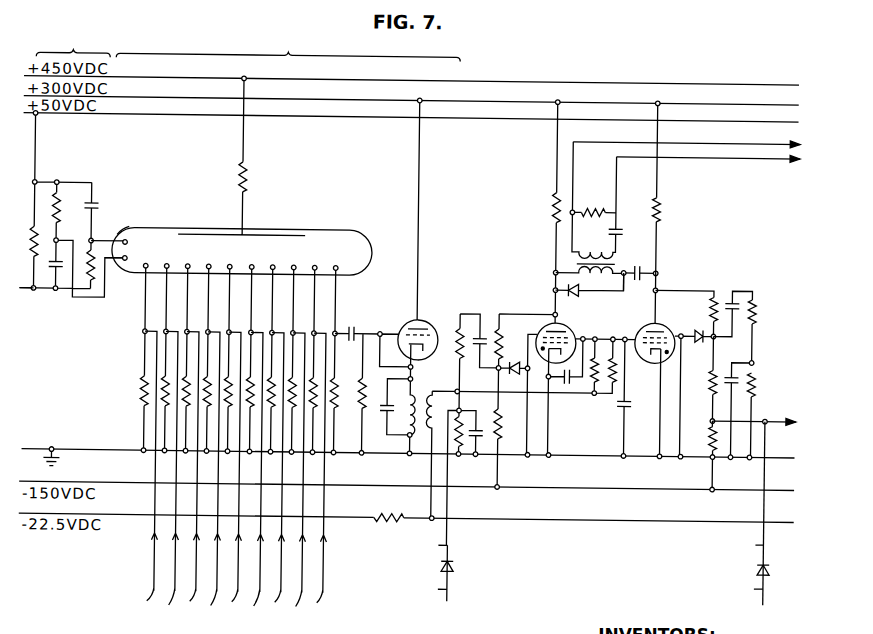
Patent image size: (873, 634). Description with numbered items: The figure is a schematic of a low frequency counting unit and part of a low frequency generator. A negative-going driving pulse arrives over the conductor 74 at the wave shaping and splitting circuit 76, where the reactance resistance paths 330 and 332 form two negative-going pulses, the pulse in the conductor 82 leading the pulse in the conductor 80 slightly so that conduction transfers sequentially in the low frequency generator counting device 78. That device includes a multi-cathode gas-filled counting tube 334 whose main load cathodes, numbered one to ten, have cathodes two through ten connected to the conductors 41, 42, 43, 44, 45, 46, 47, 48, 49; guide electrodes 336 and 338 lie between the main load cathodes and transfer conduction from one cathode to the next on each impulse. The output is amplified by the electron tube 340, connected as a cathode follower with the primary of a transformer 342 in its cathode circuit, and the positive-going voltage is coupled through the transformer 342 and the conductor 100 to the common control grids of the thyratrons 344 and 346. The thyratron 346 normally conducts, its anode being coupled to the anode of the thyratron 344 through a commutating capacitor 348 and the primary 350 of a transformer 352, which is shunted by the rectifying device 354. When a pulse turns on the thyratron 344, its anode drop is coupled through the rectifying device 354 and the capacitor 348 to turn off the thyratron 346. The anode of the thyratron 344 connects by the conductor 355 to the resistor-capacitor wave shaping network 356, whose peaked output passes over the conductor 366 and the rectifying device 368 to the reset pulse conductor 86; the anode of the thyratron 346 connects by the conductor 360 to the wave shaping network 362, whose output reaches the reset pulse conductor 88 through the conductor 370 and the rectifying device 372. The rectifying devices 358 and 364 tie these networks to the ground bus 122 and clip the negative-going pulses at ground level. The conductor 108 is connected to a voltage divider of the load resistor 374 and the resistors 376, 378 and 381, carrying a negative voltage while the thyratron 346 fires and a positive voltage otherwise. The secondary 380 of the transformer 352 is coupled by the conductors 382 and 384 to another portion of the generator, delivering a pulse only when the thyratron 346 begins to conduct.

The conductor 41 is at (321, 476).
The conductor 42 is at (298, 482).
The conductor 43 is at (278, 476).
The conductor 44 is at (259, 481).
The conductor 45 is at (236, 475).
The conductor 46 is at (214, 481).
The conductor 47 is at (194, 475).
The conductor 48 is at (171, 480).
The conductor 49 is at (146, 474).
The conductor 74 is at (23, 296).
The wave shaping and splitting circuit 76 is at (73, 43).
The low frequency generator counting device 78 is at (288, 45).
The conductor 80 is at (114, 243).
The conductor 82 is at (91, 299).
The reset pulse conductor 86 is at (431, 589).
The reset pulse conductor 88 is at (746, 589).
The conductor 100 is at (448, 391).
The conductor 108 is at (781, 414).
The ground bus 122 is at (95, 451).
The reactance resistance path 330 is at (57, 193).
The reactance resistance path 332 is at (94, 210).
The multi-cathode gas-filled counting tube 334 is at (310, 231).
The guide electrode 336 is at (129, 243).
The guide electrode 338 is at (125, 266).
The electron tube 340 is at (428, 324).
The transformer 342 is at (408, 444).
The thyratron 344 is at (571, 325).
The thyratron 346 is at (663, 321).
The commutating capacitor 348 is at (632, 289).
The primary 350 is at (576, 278).
The transformer 352 is at (576, 262).
The rectifying device 354 is at (561, 294).
The conductor 355 is at (528, 325).
The resistor-capacitor wave shaping network 356 is at (466, 322).
The rectifying device 358 is at (514, 362).
The conductor 360 is at (672, 287).
The wave shaping network 362 is at (756, 316).
The rectifying device 364 is at (699, 330).
The conductor 366 is at (425, 569).
The rectifying device 368 is at (457, 565).
The conductor 370 is at (740, 546).
The rectifying device 372 is at (760, 562).
The load resistor 374 is at (661, 210).
The resistor 376 is at (714, 294).
The resistor 378 is at (710, 381).
The secondary 380 is at (615, 252).
The resistor 381 is at (711, 449).
The conductor 382 is at (749, 140).
The conductor 384 is at (747, 155).